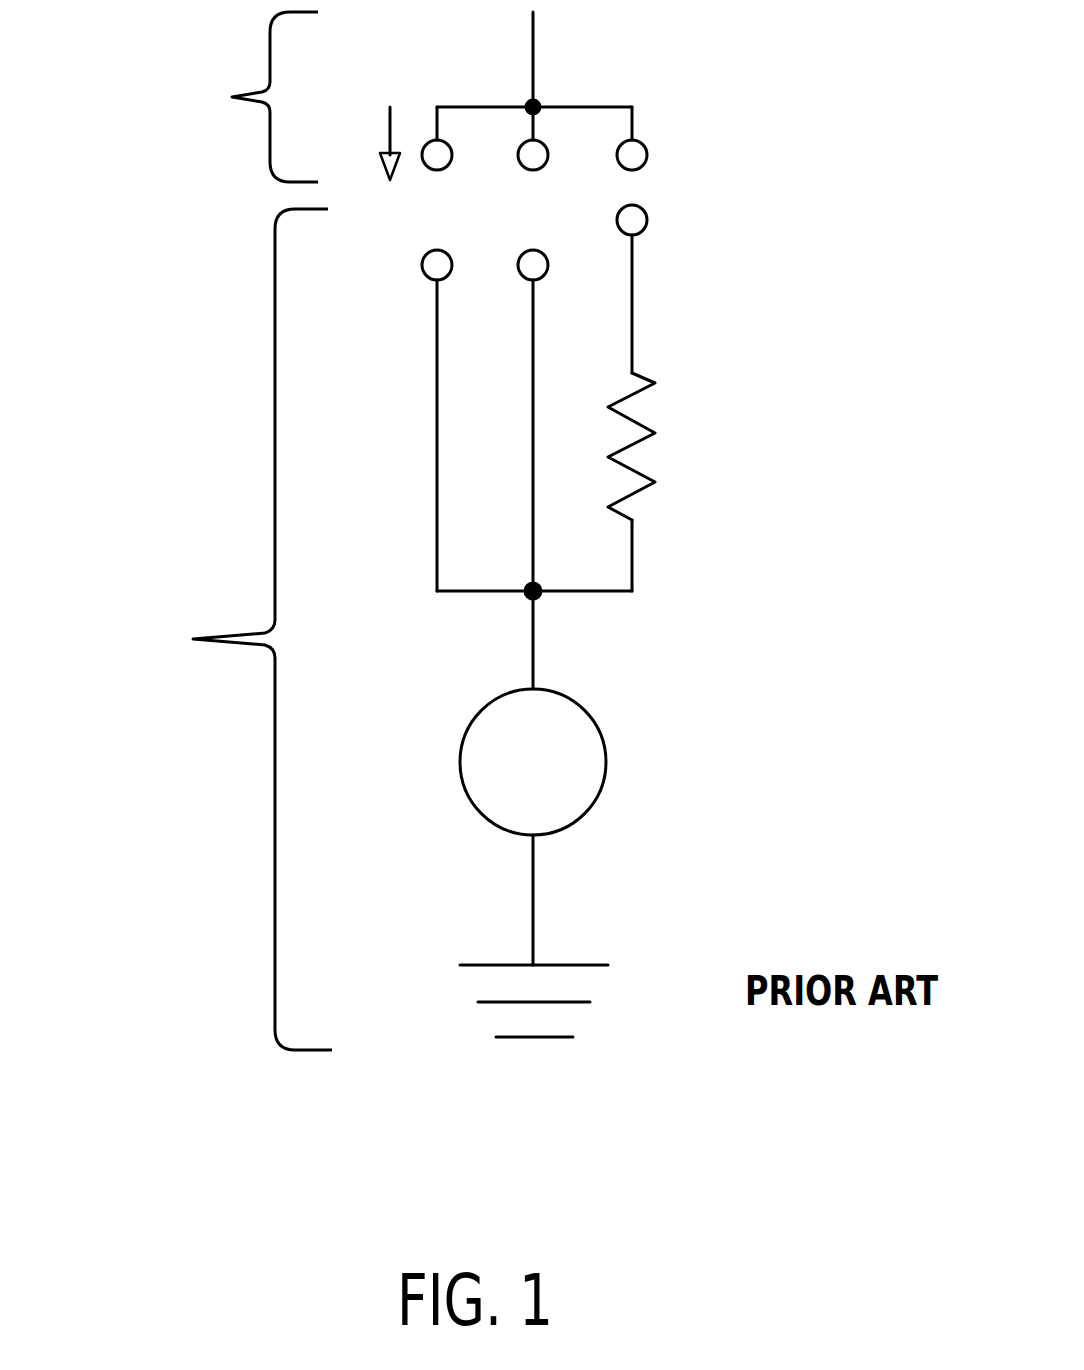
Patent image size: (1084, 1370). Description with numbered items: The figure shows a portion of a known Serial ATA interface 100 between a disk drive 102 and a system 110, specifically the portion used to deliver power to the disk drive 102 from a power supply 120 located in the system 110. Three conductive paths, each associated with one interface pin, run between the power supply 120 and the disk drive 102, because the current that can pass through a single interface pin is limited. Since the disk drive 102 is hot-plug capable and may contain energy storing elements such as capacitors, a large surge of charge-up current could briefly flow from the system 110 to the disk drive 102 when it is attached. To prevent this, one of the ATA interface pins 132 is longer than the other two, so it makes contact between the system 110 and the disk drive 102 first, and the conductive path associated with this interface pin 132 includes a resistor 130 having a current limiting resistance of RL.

The Serial ATA interface 100 is at (483, 531).
The disk drive 102 is at (192, 110).
The system 110 is at (407, 591).
The power supply 120 is at (607, 770).
The resistor 130 is at (655, 385).
The interface pin 132 is at (652, 222).